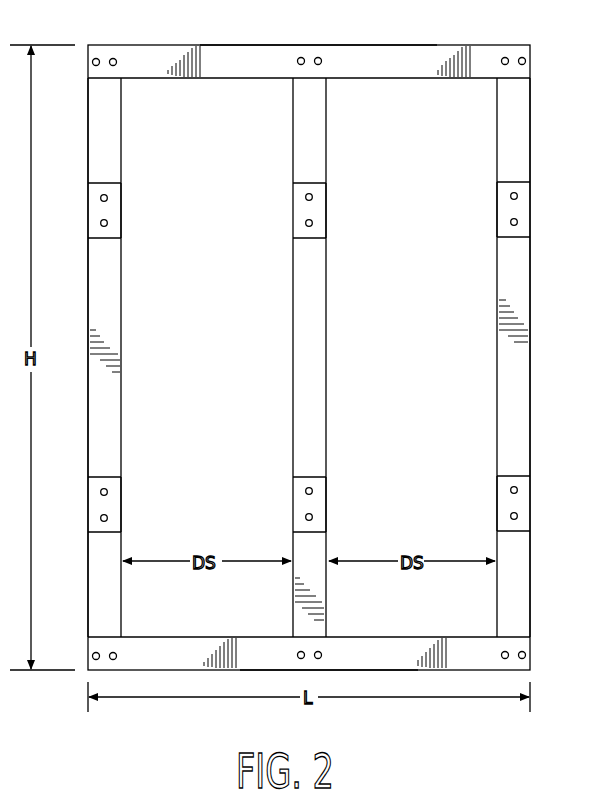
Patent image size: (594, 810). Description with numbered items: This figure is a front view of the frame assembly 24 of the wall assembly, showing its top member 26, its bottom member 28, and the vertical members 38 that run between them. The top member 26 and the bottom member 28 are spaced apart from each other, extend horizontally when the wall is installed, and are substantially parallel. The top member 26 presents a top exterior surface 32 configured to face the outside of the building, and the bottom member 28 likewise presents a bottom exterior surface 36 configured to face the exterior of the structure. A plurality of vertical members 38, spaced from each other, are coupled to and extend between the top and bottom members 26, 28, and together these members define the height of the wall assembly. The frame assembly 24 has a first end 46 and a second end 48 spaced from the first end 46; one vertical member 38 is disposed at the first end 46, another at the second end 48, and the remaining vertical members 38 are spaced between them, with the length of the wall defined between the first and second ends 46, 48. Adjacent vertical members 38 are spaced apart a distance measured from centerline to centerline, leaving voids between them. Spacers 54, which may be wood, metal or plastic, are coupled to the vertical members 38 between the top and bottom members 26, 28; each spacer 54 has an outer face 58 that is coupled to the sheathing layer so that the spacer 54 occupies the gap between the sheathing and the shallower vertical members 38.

The frame assembly 24 is at (481, 32).
The top member 26 is at (226, 52).
The bottom member 28 is at (360, 645).
The top exterior surface 32 is at (371, 72).
The bottom exterior surface 36 is at (173, 664).
The vertical members 38 is at (112, 328).
The first end 46 is at (79, 544).
The second end 48 is at (536, 546).
The spacer 54 is at (292, 201).
The outer face 58 is at (487, 190).